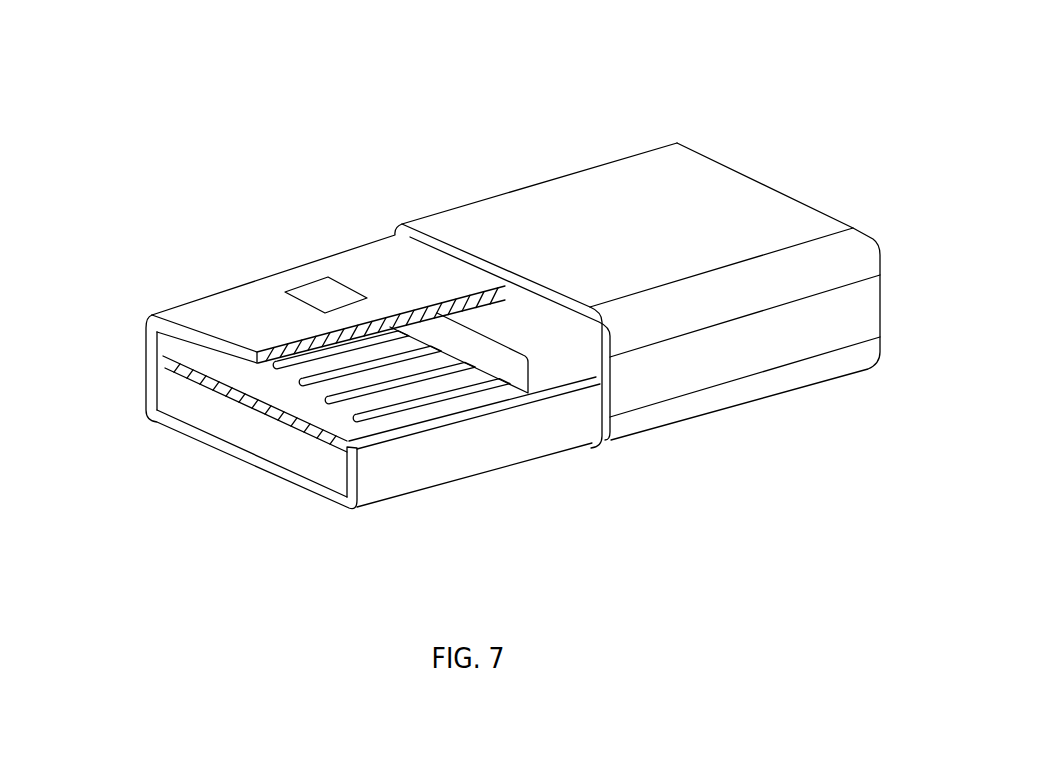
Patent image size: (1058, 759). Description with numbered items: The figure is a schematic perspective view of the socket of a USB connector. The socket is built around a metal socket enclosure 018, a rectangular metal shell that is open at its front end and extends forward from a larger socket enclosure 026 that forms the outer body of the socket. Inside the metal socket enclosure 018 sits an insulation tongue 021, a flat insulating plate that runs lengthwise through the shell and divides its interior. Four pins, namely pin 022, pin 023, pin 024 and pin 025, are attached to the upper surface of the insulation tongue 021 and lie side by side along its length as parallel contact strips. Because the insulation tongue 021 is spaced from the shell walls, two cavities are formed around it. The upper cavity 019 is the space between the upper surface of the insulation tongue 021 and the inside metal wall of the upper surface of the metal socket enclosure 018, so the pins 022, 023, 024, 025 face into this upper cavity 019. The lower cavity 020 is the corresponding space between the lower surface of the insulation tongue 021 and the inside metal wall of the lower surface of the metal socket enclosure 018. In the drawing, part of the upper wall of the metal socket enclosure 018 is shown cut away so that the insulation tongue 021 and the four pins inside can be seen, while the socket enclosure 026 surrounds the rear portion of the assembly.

The metal socket enclosure 018 is at (247, 300).
The upper cavity 019 is at (216, 362).
The lower cavity 020 is at (206, 413).
The insulation tongue 021 is at (272, 412).
The pin 022 is at (469, 389).
The pin 023 is at (440, 371).
The pin 024 is at (413, 348).
The pin 025 is at (383, 334).
The socket enclosure 026 is at (673, 210).